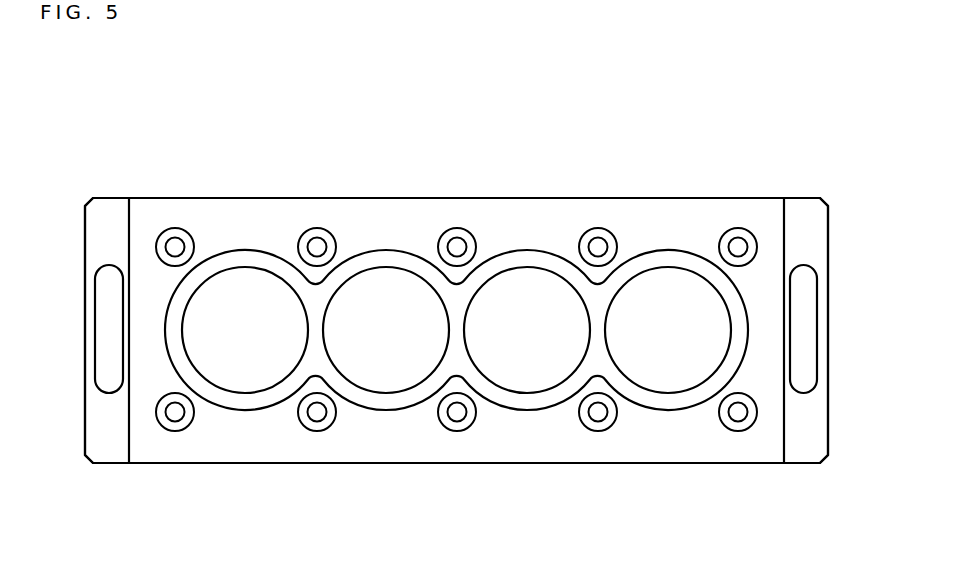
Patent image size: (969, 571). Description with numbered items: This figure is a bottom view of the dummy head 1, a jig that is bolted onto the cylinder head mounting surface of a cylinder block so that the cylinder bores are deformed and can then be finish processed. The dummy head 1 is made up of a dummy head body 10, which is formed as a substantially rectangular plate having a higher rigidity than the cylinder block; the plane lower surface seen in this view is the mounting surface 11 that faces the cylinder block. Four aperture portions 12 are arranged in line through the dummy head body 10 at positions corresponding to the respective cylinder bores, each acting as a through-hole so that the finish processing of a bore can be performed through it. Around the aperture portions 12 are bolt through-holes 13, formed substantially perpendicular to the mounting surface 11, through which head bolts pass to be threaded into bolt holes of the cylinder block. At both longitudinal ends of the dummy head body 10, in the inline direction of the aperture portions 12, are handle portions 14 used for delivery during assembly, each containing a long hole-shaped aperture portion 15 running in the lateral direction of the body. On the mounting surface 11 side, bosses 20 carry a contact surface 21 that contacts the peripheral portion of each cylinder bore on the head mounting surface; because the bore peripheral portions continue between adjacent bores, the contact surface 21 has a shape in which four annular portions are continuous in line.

The dummy head 1 is at (450, 139).
The dummy head body 10 is at (385, 196).
The mounting surface 11 is at (668, 448).
The aperture portion 12 is at (234, 346).
The bolt through-hole 13 is at (177, 243).
The handle portion 14 is at (105, 198).
The long hole-shaped aperture portion 15 is at (104, 280).
The boss 20 is at (386, 422).
The contact surface 21 is at (528, 256).